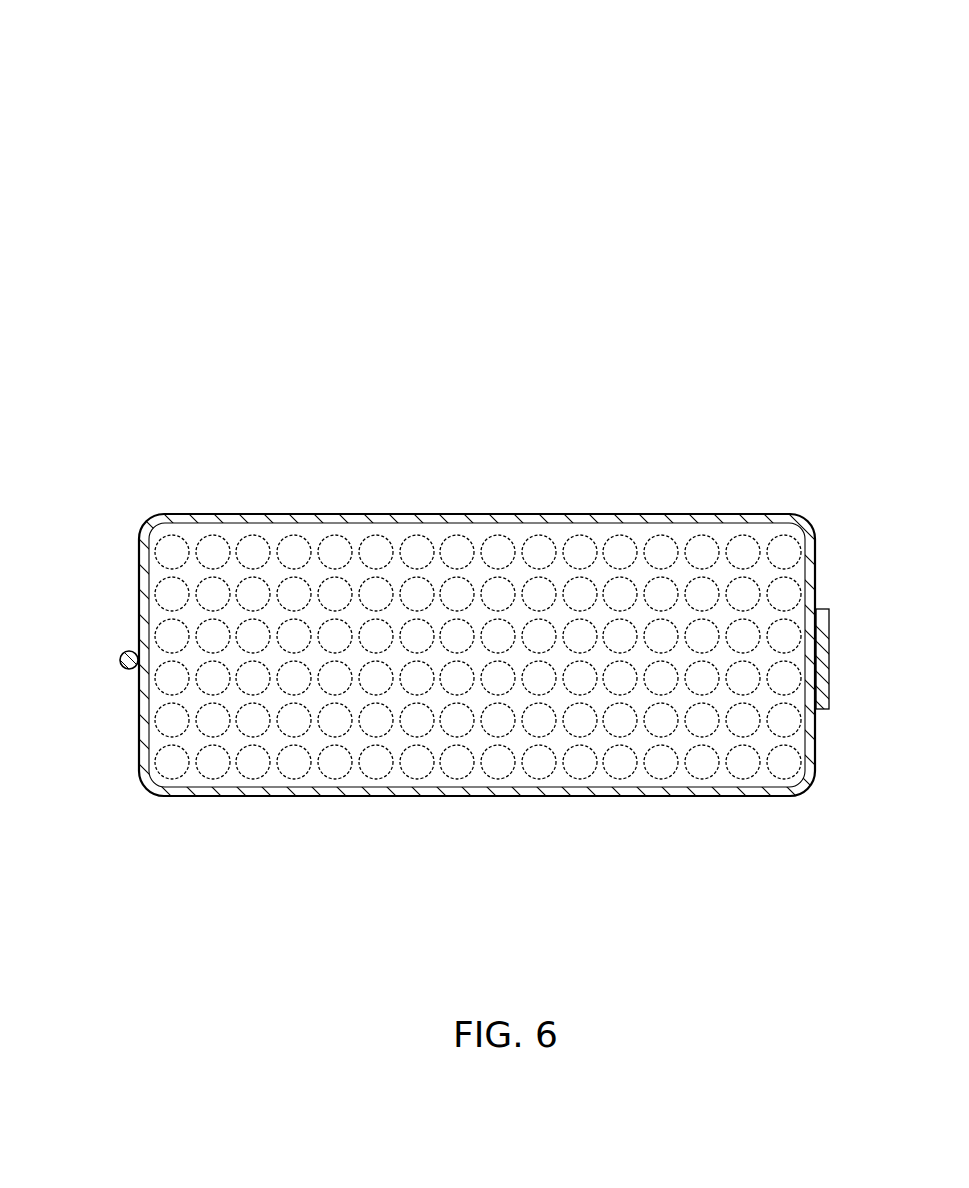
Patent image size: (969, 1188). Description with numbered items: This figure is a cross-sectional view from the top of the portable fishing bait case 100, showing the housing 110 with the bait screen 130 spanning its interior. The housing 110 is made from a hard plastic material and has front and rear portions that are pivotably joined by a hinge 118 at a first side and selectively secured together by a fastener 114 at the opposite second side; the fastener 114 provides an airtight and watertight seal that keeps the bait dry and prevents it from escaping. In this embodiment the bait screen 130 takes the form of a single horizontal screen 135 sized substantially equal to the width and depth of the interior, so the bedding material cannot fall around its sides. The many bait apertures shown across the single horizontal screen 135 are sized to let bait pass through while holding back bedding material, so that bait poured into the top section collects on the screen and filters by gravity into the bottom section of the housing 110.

The portable fishing bait case 100 is at (484, 486).
The housing 110 is at (490, 792).
The fastener 114 is at (830, 640).
The hinge 118 is at (125, 655).
The bait screen 130 is at (560, 580).
The single horizontal screen 135 is at (397, 575).